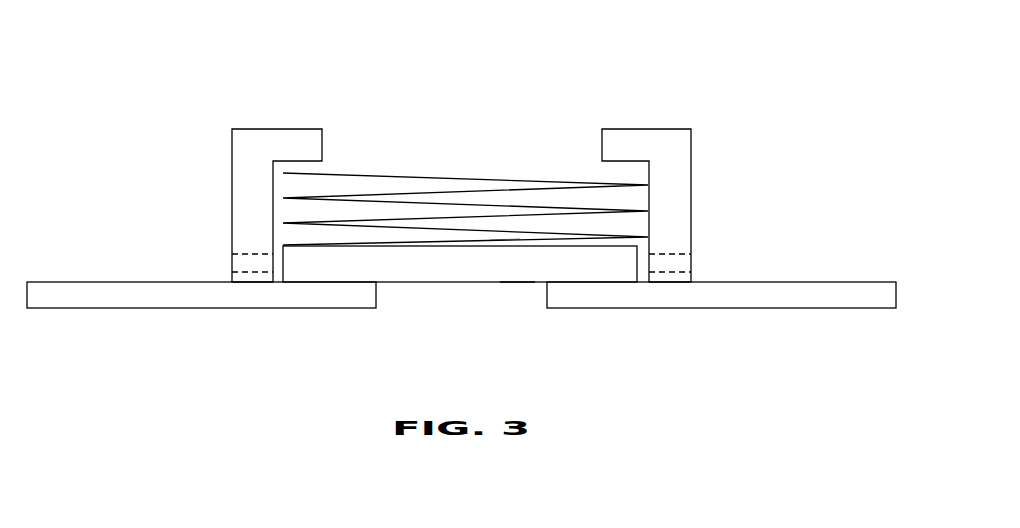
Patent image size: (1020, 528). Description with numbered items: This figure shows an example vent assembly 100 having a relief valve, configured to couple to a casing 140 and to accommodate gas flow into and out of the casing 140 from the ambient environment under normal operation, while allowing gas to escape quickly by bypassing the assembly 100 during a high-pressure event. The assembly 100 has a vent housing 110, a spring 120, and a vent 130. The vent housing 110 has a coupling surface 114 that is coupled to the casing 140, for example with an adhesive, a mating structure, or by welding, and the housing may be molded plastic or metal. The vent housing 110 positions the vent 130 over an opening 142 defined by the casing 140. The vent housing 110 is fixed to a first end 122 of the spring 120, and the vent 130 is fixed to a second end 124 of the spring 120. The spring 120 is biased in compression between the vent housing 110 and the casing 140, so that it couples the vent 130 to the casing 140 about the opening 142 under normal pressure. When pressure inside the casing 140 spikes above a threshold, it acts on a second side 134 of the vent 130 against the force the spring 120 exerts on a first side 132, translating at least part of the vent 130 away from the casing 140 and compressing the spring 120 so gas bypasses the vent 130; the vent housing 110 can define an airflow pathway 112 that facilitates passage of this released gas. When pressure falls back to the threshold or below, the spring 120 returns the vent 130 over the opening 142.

The assembly 100 is at (653, 70).
The vent housing 110 is at (679, 145).
The airflow pathway 112 is at (243, 263).
The coupling surface 114 is at (667, 283).
The spring 120 is at (493, 179).
The first end 122 is at (333, 165).
The second end 124 is at (296, 243).
The vent 130 is at (428, 273).
The first side 132 is at (507, 246).
The second side 134 is at (517, 283).
The casing 140 is at (797, 280).
The opening 142 is at (404, 298).